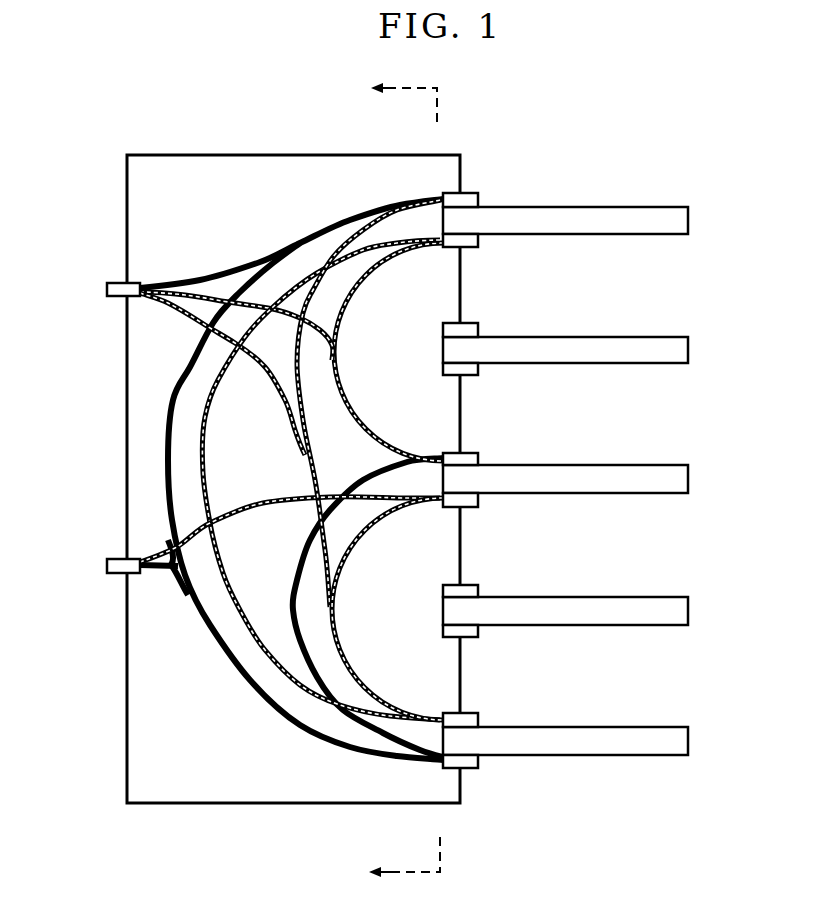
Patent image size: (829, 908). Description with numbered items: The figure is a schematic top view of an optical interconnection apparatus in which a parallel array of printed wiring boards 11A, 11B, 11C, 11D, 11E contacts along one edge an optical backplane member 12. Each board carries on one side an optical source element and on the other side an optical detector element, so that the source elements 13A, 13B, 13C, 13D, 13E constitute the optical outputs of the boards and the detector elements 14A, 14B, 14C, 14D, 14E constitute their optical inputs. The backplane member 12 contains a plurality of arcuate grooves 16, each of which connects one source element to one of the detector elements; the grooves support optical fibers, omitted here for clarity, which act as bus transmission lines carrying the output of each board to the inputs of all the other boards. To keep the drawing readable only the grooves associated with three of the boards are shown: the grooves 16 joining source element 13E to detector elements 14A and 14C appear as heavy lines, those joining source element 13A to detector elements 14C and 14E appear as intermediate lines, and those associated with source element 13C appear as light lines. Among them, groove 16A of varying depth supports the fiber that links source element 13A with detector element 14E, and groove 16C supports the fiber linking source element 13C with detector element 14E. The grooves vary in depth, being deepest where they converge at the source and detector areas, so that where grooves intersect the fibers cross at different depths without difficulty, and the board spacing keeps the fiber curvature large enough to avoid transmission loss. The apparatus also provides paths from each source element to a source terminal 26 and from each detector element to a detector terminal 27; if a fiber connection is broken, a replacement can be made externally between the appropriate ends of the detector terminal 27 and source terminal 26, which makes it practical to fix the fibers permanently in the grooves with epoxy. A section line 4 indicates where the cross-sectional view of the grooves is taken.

The section line 4- 4 is at (392, 481).
The printed wiring board 11A is at (688, 221).
The printed wiring board 11B is at (688, 350).
The printed wiring board 11C is at (688, 479).
The printed wiring board 11D is at (688, 611).
The printed wiring board 11E is at (688, 741).
The optical backplane member 12 is at (130, 430).
The optical source element 13A is at (480, 243).
The optical source element 13B is at (480, 371).
The optical source element 13C is at (480, 502).
The optical source element 13D is at (480, 633).
The optical source element 13E is at (480, 763).
The optical detector element 14A is at (480, 198).
The optical detector element 14B is at (480, 328).
The optical detector element 14C is at (480, 458).
The optical detector element 14D is at (480, 590).
The optical detector element 14E is at (480, 718).
The arcuate groove 16 is at (283, 249).
The groove 16A is at (296, 262).
The groove 16C is at (352, 545).
The source terminal 26 is at (107, 565).
The detector terminal 27 is at (107, 290).